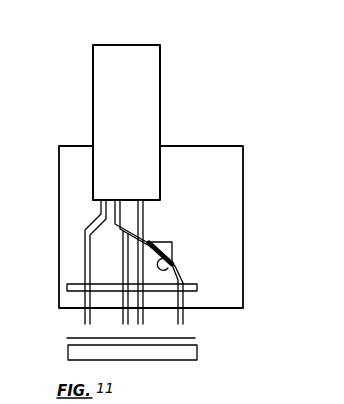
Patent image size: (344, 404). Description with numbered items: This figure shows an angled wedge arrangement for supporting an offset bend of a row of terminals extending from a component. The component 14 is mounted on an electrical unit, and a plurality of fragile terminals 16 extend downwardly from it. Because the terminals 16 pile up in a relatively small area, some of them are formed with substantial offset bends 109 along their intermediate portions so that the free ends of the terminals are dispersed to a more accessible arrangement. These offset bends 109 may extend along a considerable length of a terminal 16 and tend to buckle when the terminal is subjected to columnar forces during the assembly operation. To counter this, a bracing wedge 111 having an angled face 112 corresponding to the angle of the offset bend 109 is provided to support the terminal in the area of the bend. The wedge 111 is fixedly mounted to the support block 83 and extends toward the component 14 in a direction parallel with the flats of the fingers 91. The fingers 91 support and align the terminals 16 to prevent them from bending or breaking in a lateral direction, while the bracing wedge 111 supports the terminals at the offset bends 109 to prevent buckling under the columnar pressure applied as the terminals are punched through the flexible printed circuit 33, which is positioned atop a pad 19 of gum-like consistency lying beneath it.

The component 14 is at (159, 107).
The finger support block 83 is at (241, 187).
The terminal 16 is at (87, 245).
The offset bend 109 is at (157, 254).
The bracing wedge 111 is at (173, 246).
The angled face 112 is at (172, 270).
The finger 91 is at (197, 288).
The flexible printed circuit 33 is at (195, 338).
The pad 19 is at (197, 353).